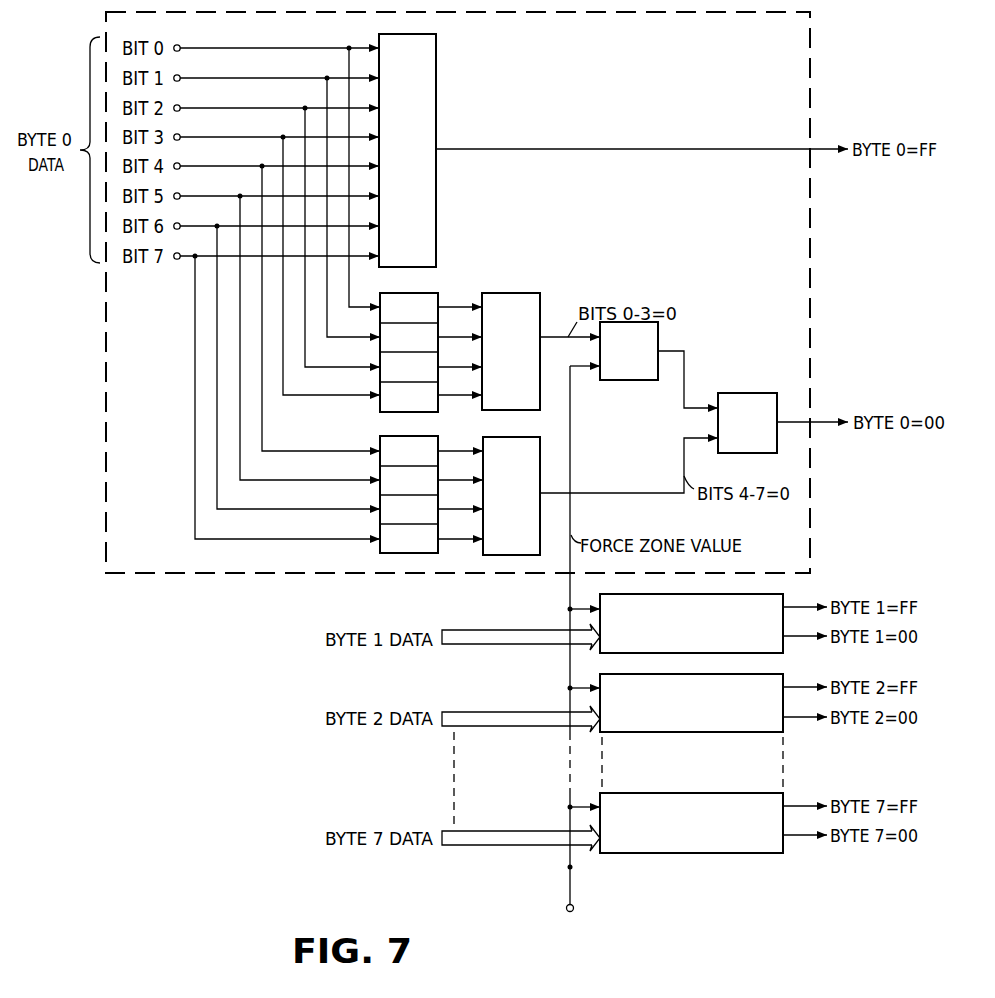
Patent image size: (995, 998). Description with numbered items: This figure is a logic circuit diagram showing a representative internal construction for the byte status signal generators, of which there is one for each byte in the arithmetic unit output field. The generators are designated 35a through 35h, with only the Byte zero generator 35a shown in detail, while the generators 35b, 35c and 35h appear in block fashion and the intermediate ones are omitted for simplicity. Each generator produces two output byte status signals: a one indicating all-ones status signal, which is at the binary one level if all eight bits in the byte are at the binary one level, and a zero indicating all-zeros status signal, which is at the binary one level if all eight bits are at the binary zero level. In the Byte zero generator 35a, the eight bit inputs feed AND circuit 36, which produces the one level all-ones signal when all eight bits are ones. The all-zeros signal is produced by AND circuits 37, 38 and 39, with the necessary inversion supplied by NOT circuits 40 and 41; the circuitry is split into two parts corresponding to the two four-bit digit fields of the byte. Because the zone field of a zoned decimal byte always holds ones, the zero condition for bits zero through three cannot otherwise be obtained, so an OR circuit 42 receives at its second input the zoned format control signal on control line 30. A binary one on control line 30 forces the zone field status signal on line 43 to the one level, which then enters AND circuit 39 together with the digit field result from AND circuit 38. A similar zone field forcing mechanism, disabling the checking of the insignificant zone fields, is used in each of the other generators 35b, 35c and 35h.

The control line 30 is at (571, 867).
The byte status signal generator 35a is at (103, 399).
The byte status signal generator 35b is at (774, 646).
The byte status signal generator 35c is at (668, 731).
The byte status signal generator 35h is at (688, 796).
The AND circuit 36 is at (436, 66).
The AND circuit 37 is at (510, 297).
The AND circuit 38 is at (483, 447).
The AND circuit 39 is at (733, 396).
The NOT circuit 40 is at (434, 293).
The NOT circuit 41 is at (380, 438).
The OR circuit 42 is at (633, 381).
The line 43 is at (683, 366).